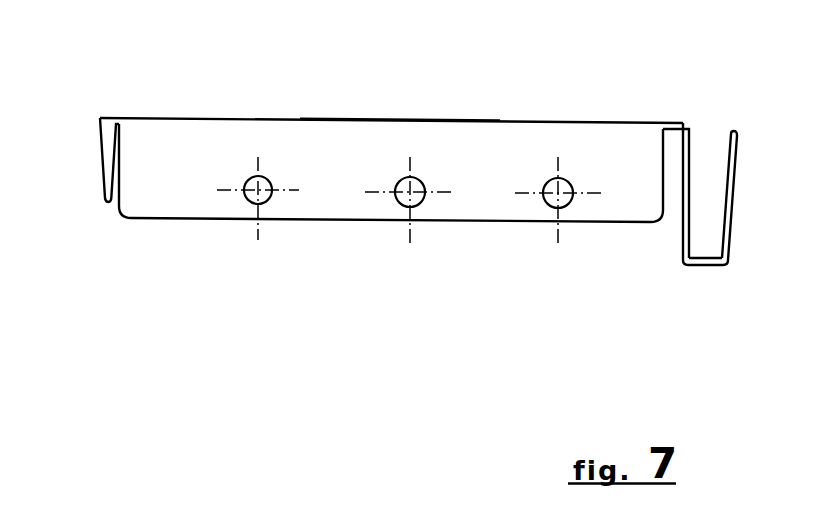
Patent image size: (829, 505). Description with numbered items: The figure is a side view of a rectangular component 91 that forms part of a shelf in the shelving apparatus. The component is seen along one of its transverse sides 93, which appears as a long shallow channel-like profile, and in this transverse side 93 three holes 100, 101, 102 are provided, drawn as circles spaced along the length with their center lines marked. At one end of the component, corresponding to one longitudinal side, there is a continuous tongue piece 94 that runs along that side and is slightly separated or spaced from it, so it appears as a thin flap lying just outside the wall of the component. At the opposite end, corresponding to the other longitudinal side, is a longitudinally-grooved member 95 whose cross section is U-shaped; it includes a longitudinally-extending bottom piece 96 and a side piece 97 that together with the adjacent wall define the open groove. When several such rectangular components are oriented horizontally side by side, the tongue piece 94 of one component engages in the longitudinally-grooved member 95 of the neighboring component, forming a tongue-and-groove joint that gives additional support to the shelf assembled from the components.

The rectangular component 91 is at (408, 120).
The transverse side 93 is at (161, 190).
The continuous tongue piece 94 is at (100, 158).
The longitudinally-grooved member 95 is at (690, 158).
The bottom piece 96 is at (705, 265).
The side piece 97 is at (735, 189).
The hole 100 is at (253, 205).
The hole 101 is at (406, 197).
The hole 102 is at (557, 200).